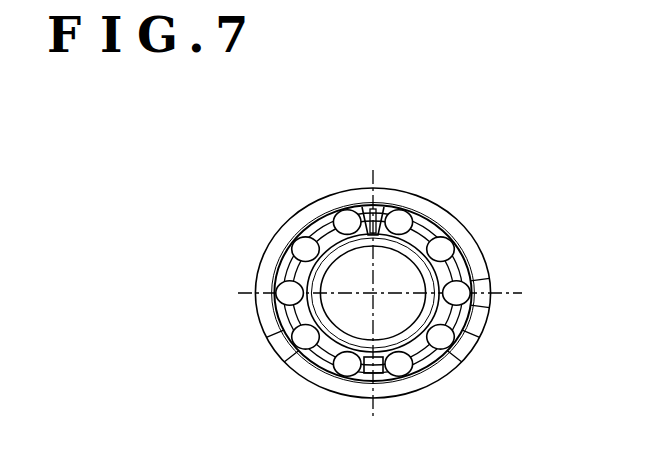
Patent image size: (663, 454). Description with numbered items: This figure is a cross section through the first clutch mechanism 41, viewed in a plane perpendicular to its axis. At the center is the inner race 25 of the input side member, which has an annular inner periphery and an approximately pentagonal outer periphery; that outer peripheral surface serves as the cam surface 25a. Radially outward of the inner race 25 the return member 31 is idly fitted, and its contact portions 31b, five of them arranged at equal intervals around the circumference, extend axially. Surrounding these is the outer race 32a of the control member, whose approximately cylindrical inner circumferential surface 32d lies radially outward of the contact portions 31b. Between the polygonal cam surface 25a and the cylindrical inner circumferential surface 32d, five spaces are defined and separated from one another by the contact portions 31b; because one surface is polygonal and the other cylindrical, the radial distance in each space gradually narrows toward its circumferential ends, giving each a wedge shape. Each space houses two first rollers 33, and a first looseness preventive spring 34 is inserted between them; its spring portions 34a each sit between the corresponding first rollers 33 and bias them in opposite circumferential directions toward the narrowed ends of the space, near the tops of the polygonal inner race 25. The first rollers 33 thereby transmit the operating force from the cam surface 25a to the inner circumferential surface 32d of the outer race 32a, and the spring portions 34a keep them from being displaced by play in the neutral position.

The first clutch mechanism 41 is at (323, 185).
The outer race 32a is at (422, 200).
The inner circumferential surface 32d is at (348, 212).
The contact portions 31b is at (318, 224).
The first looseness preventive spring 34 is at (282, 266).
The spring portions 34a is at (486, 265).
The first rollers 33 is at (483, 281).
The return member 31 is at (360, 376).
The inner race 25 is at (414, 262).
The cam surface 25a is at (450, 236).